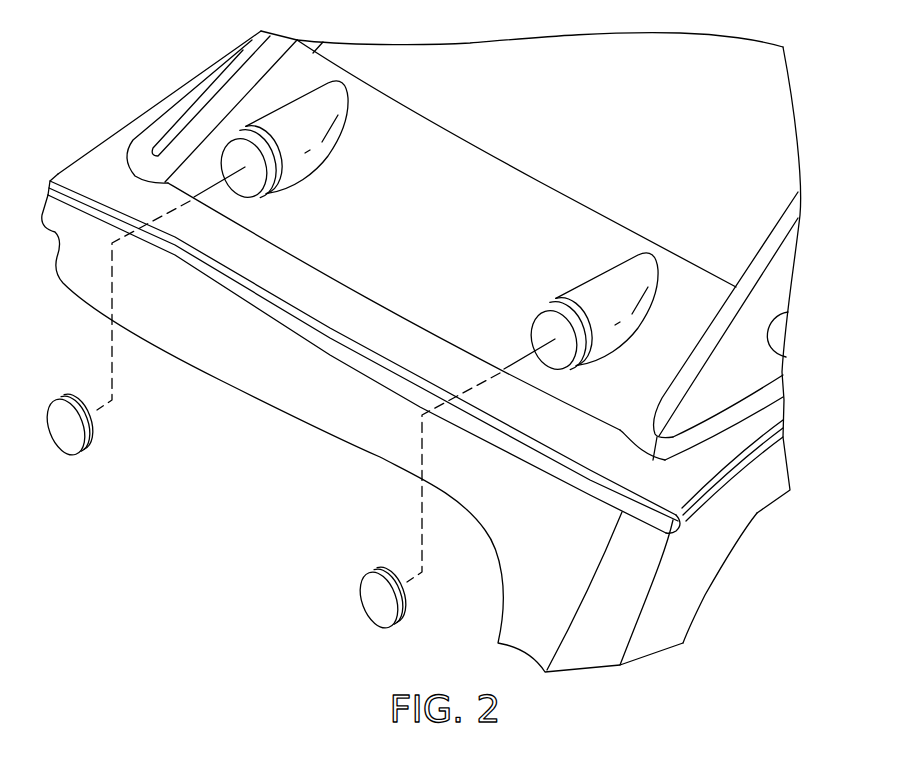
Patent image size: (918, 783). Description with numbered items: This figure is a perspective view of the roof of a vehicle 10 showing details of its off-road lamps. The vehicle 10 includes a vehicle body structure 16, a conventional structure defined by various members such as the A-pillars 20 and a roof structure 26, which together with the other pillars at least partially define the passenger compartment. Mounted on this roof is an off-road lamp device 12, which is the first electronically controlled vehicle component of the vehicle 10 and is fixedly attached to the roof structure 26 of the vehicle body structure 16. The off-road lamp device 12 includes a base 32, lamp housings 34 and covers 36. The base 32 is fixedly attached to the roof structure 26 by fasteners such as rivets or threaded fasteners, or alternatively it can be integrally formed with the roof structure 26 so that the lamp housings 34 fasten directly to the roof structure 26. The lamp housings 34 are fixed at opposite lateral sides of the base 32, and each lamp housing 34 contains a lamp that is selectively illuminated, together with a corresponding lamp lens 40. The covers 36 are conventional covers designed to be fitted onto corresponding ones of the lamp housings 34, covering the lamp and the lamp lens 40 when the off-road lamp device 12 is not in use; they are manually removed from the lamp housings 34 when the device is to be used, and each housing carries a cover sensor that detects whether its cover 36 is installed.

The vehicle 10 is at (418, 337).
The off-road lamp device 12 is at (658, 244).
The vehicle body structure 16 is at (148, 99).
The A-pillars 20 is at (677, 592).
The roof structure 26 is at (690, 472).
The base 32 is at (463, 193).
The lamp housings 34 is at (325, 152).
The covers 36 is at (62, 432).
The lamp lens 40 is at (252, 182).